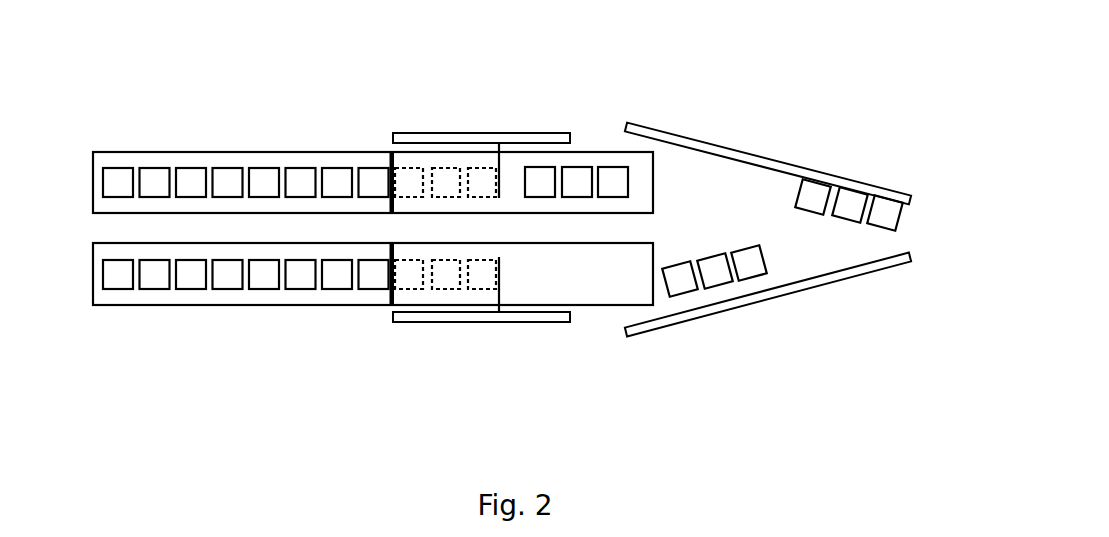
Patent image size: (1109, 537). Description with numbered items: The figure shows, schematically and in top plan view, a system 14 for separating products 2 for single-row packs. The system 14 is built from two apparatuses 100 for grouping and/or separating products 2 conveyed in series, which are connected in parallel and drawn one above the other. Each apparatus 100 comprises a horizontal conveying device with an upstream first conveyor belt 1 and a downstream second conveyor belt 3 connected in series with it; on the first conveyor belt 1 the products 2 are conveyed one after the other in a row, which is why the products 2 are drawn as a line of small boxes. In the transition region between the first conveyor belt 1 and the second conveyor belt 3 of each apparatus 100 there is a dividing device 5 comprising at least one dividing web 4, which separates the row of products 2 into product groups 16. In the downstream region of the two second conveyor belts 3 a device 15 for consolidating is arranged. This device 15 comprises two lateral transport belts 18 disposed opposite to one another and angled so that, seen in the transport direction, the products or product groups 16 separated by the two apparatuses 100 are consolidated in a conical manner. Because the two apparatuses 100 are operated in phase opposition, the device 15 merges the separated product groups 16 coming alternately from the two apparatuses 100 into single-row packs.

The first conveyor belt 1 is at (84, 137).
The products 2 is at (445, 228).
The second conveyor belt 3 is at (488, 85).
The dividing web 4 is at (443, 93).
The dividing device 5 is at (405, 102).
The system for separating products 14 is at (214, 72).
The device for consolidating 15 is at (942, 82).
The product groups 16 is at (779, 238).
The lateral transport belts 18 is at (814, 143).
The apparatus for grouping and/or separating products 100 is at (245, 138).